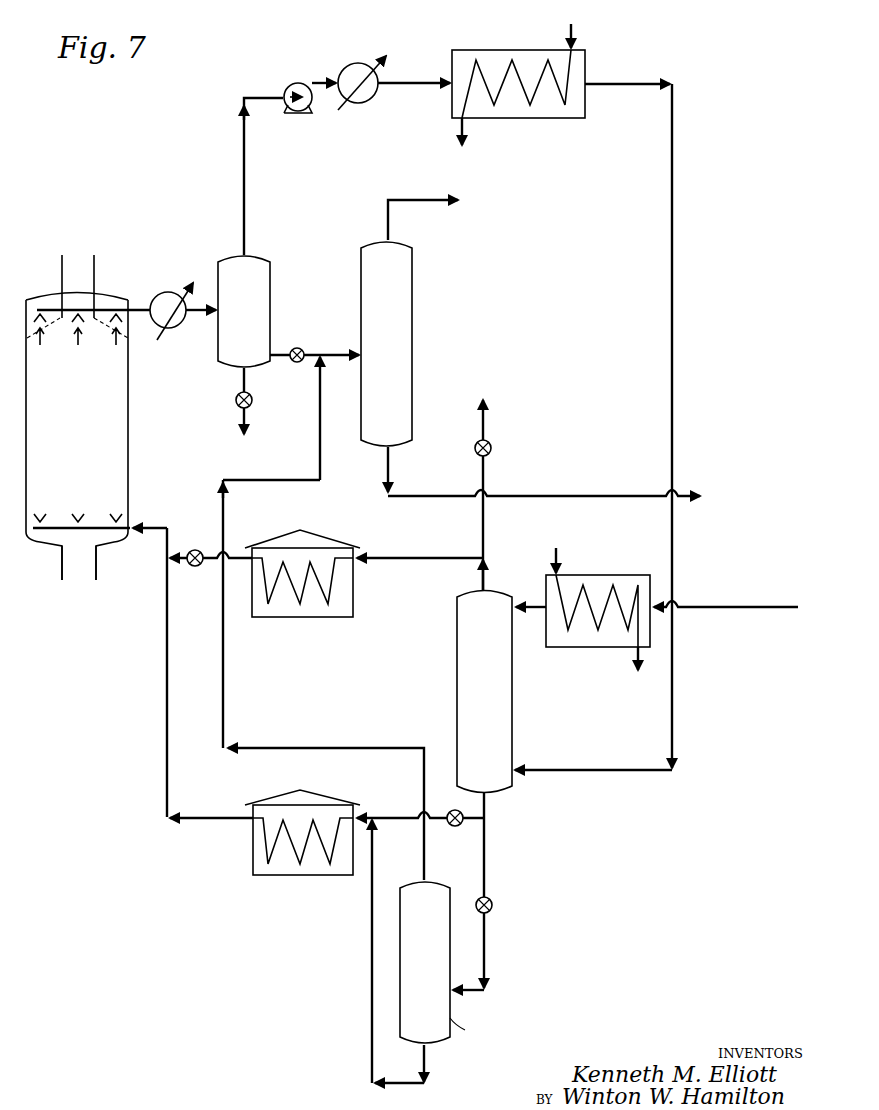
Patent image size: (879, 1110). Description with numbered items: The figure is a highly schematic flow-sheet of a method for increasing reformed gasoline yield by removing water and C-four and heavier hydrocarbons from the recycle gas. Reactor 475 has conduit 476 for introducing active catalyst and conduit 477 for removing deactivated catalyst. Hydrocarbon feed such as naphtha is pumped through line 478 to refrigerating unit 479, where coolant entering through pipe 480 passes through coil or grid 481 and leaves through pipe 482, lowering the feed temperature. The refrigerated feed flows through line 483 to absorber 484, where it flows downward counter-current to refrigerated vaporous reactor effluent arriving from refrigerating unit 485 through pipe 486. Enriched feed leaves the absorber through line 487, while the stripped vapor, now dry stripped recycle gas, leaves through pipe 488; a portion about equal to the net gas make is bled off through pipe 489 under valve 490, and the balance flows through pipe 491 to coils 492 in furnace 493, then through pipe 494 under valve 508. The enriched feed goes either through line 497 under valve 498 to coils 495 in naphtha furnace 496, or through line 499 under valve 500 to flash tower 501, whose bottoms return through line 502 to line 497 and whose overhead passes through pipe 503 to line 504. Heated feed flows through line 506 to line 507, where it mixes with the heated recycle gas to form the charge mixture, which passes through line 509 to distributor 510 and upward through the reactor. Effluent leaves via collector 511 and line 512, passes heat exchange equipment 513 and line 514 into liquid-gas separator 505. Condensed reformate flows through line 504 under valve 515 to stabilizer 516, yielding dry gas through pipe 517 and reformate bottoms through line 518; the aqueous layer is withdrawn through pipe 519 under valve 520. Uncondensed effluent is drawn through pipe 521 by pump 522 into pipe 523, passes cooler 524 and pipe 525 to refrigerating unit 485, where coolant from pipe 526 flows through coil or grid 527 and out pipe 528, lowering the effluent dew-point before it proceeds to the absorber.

The reactor 475 is at (126, 408).
The conduit 476 is at (60, 272).
The conduit 477 is at (62, 578).
The line 478 is at (690, 610).
The refrigerating unit 479 is at (622, 572).
The pipe 480 is at (560, 553).
The coil or grid 481 is at (573, 635).
The pipe 482 is at (643, 660).
The line 483 is at (532, 612).
The absorber 484 is at (458, 672).
The refrigerating unit 485 is at (503, 53).
The pipe 486 is at (676, 320).
The line 487 is at (490, 808).
The pipe 488 is at (488, 578).
The pipe 489 is at (488, 475).
The valve 490 is at (492, 442).
The pipe 491 is at (425, 545).
The coils 492 is at (336, 596).
The furnace 493 is at (270, 620).
The pipe 494 is at (235, 555).
The coils 495 is at (265, 842).
The naphtha furnace 496 is at (320, 878).
The line 497 is at (398, 800).
The valve 498 is at (452, 828).
The line 499 is at (490, 970).
The valve 500 is at (494, 908).
The flash tower 501 is at (488, 962).
The line 502 is at (370, 975).
The pipe 503 is at (270, 480).
The line 504 is at (318, 380).
The liquid-gas separator 505 is at (244, 311).
The line 506 is at (208, 810).
The line 507 is at (165, 690).
The valve 508 is at (199, 550).
The line 509 is at (150, 525).
The distributor 510 is at (92, 522).
The collector 511 is at (100, 320).
The line 512 is at (137, 305).
The heat exchange equipment 513 is at (160, 335).
The line 514 is at (200, 300).
The valve 515 is at (292, 362).
The stabilizer 516 is at (412, 280).
The pipe 517 is at (398, 195).
The line 518 is at (385, 470).
The pipe 519 is at (240, 418).
The valve 520 is at (236, 396).
The pipe 521 is at (248, 188).
The pump 522 is at (293, 84).
The pipe 523 is at (312, 78).
The cooler 524 is at (358, 100).
The pipe 525 is at (402, 82).
The pipe 526 is at (575, 34).
The coil or grid 527 is at (566, 98).
The pipe 528 is at (468, 127).